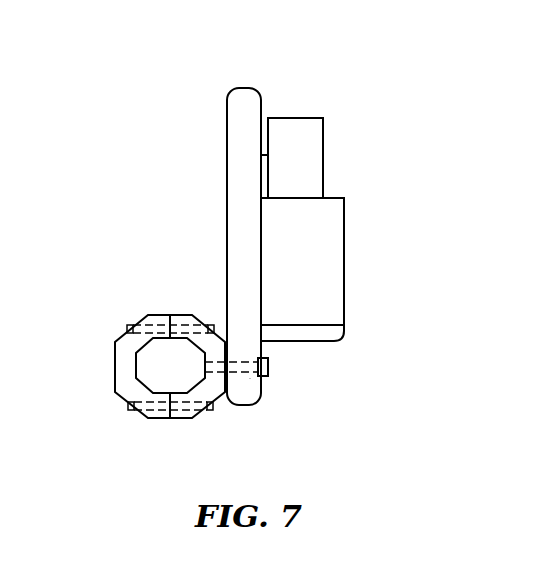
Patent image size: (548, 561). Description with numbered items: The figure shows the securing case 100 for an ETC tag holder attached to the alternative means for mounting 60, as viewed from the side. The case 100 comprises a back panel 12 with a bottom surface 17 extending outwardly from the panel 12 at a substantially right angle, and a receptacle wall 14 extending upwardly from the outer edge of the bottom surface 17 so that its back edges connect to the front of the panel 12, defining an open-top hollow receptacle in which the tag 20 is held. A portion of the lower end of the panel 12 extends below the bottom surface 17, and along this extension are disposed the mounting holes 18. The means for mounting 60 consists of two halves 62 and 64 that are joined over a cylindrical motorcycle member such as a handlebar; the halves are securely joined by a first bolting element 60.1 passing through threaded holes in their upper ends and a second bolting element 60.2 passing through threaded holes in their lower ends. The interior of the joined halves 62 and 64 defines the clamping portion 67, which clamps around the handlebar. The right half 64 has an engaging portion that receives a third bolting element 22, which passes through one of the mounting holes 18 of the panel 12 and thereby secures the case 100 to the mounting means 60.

The securing case 100 is at (325, 90).
The back panel 12 is at (227, 167).
The tag 20 is at (323, 145).
The receptacle wall 14 is at (344, 233).
The bottom surface 17 is at (345, 333).
The third bolting element 22 is at (268, 372).
The mounting holes 18 is at (250, 378).
The means for mounting 60 is at (107, 332).
The first bolting element 60.1 is at (130, 327).
The second bolting element 60.2 is at (208, 411).
The left half 62 is at (120, 395).
The right half 64 is at (182, 419).
The clamping portion 67 is at (143, 367).